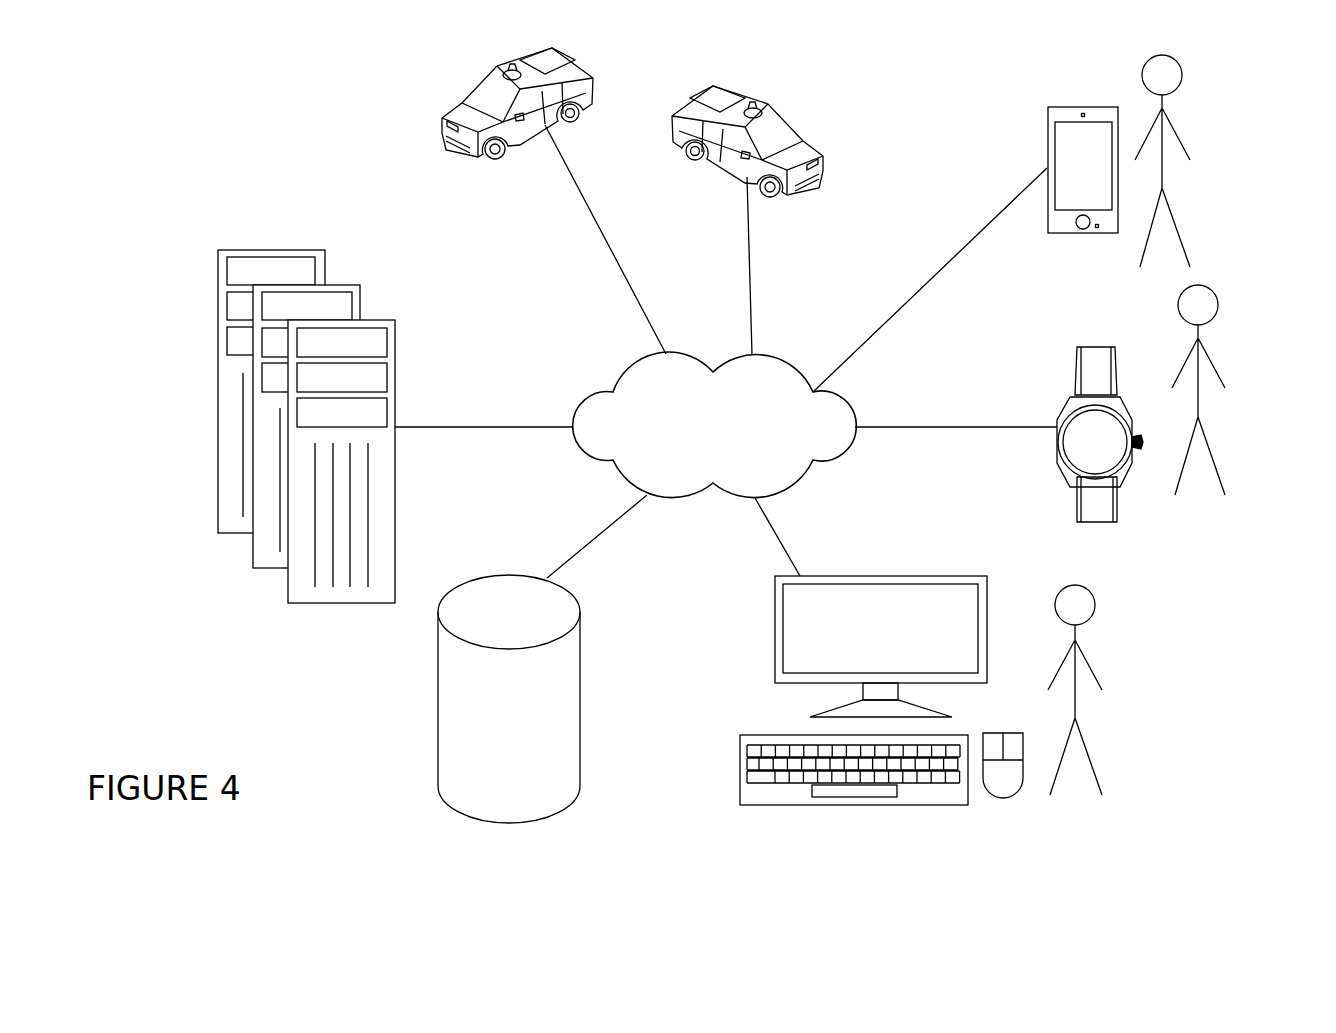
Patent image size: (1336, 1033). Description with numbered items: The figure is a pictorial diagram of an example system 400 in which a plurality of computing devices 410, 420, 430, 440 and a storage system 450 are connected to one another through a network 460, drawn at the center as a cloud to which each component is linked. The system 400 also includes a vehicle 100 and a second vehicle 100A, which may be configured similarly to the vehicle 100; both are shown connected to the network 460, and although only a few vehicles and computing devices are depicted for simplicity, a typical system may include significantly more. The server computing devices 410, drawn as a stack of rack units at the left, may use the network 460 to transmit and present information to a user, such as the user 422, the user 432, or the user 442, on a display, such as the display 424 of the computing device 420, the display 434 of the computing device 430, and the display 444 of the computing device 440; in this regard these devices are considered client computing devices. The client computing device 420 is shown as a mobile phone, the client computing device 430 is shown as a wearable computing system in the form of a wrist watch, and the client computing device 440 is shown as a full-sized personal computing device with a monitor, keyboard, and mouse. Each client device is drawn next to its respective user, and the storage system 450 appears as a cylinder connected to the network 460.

The system 400 is at (731, 435).
The vehicle 100 is at (437, 132).
The vehicle 100A is at (823, 158).
The server computing devices 410 is at (395, 365).
The client computing device 420 is at (1035, 182).
The user 422 is at (1167, 173).
The display 424 is at (1048, 118).
The client computing device 430 is at (1059, 447).
The user 432 is at (1200, 400).
The display 434 is at (1132, 458).
The client computing device 440 is at (910, 655).
The user 442 is at (1075, 702).
The display 444 is at (978, 600).
The storage system 450 is at (582, 708).
The network 460 is at (580, 452).